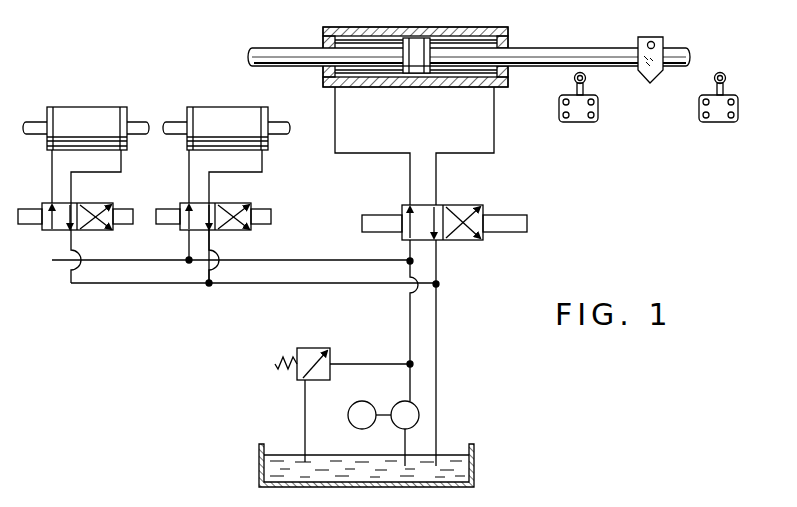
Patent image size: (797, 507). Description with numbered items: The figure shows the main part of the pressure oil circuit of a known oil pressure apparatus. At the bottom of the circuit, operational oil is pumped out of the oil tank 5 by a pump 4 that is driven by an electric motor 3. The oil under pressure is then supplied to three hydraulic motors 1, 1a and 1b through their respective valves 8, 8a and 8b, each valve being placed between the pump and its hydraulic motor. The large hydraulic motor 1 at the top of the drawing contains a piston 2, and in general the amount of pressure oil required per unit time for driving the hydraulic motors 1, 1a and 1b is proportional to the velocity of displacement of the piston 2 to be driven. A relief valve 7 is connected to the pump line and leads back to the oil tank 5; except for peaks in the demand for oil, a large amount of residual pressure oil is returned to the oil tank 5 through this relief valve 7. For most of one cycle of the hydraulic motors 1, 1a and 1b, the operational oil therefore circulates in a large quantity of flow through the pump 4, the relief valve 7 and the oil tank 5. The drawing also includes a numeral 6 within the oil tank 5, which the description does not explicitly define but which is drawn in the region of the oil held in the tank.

The hydraulic motor 1 is at (480, 28).
The hydraulic motor 1a is at (222, 112).
The hydraulic motor 1b is at (101, 112).
The piston 2 is at (418, 87).
The electric motor 3 is at (352, 425).
The pump 4 is at (399, 428).
The oil tank 5 is at (478, 465).
The hydraulic fluid 6 is at (285, 456).
The relief valve 7 is at (318, 347).
The valve 8 is at (488, 209).
The valve 8a is at (250, 207).
The valve 8b is at (112, 207).